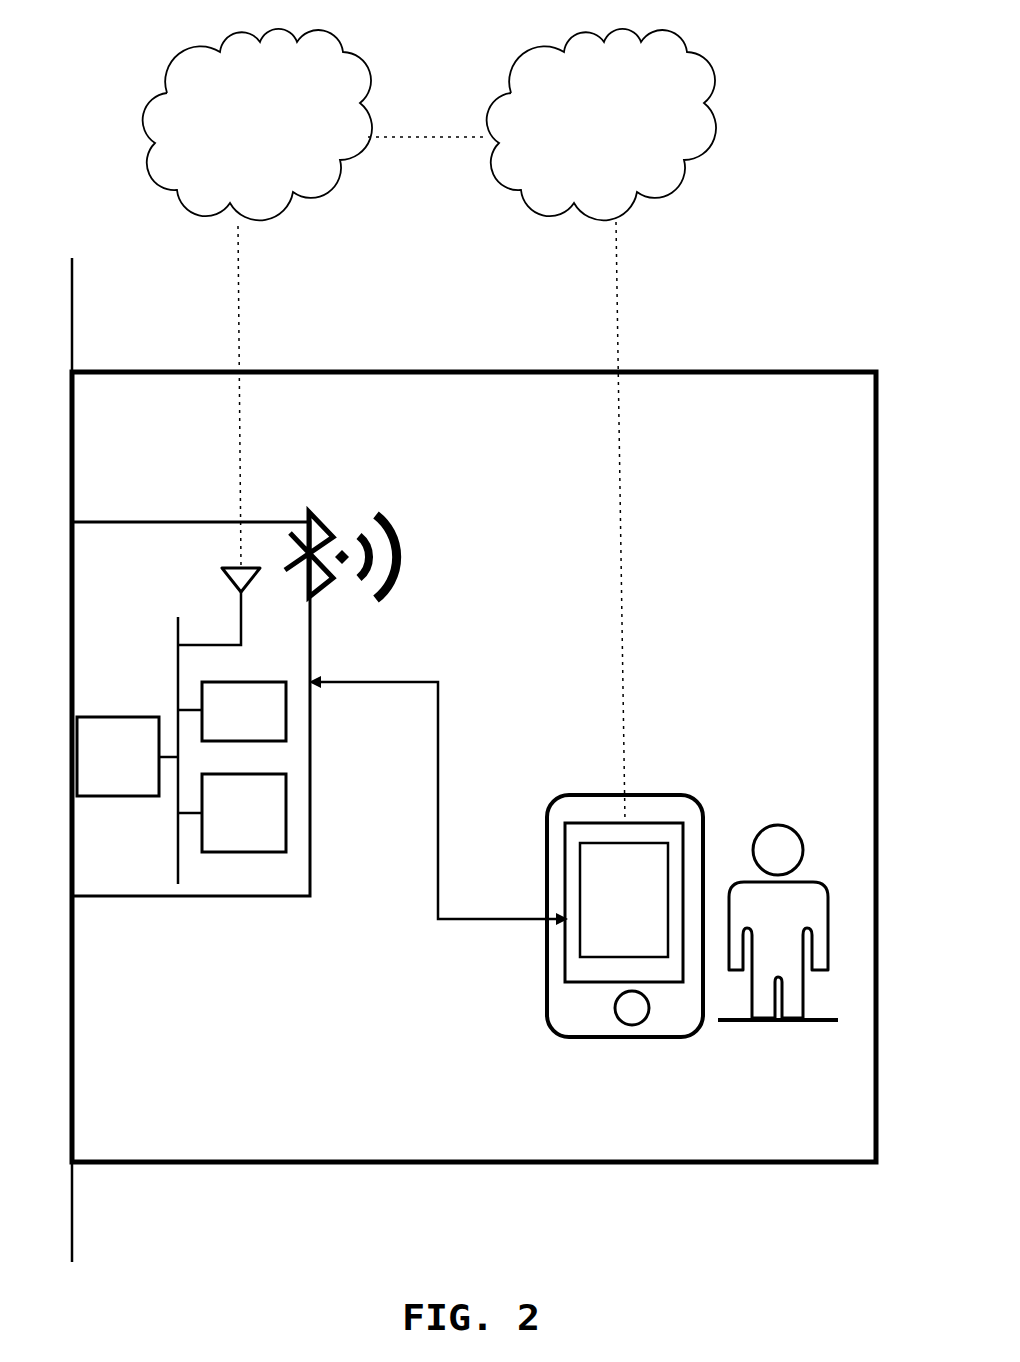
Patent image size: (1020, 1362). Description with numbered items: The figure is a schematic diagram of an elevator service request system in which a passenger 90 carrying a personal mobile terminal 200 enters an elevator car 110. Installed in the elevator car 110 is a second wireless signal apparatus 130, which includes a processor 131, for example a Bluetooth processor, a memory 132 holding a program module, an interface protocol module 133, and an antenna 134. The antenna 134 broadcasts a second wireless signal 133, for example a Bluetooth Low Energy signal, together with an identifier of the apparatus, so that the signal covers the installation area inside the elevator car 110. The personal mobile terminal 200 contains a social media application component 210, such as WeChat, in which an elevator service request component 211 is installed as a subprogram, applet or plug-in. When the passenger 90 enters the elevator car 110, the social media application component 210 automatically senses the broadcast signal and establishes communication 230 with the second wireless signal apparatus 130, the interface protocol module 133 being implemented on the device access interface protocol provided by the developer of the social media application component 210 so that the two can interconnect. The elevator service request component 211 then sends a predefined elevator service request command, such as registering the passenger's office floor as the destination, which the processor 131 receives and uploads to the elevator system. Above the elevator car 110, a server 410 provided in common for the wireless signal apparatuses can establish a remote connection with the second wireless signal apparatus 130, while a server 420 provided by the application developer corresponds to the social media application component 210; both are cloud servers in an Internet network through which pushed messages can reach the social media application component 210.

The server 410 is at (315, 297).
The server 420 is at (601, 425).
The elevator car 110 is at (767, 370).
The second wireless signal apparatus 130 is at (240, 898).
The processor 131 is at (127, 756).
The memory 132 is at (232, 813).
The second wireless signal / interface protocol module 133 is at (427, 462).
The antenna 134 is at (222, 572).
The communication 230 is at (425, 680).
The personal mobile terminal 200 is at (670, 802).
The social media application component 210 is at (565, 957).
The elevator service request component 211 is at (624, 900).
The passenger 90 is at (778, 826).